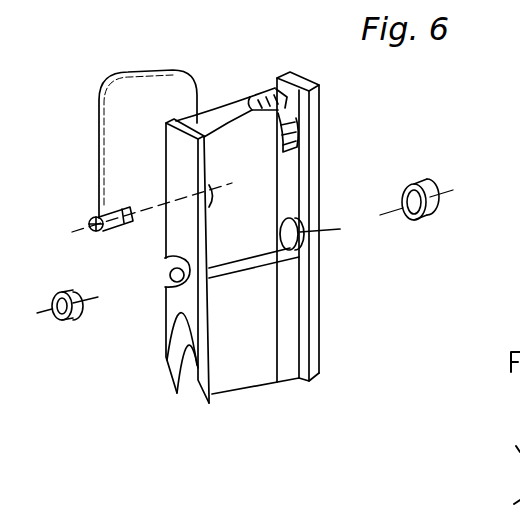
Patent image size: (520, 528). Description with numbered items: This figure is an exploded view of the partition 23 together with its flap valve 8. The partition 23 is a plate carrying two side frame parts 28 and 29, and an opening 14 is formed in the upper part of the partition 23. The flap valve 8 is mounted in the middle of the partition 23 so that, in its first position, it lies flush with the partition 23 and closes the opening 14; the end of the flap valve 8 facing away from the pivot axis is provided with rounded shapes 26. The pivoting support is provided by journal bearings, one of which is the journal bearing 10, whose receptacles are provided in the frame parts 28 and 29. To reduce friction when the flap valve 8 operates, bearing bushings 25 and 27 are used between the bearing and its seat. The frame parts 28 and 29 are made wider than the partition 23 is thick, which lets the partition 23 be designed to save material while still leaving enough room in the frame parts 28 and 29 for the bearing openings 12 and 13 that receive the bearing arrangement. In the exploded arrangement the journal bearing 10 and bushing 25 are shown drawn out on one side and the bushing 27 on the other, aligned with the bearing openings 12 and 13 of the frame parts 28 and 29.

The flap valve 8 is at (140, 104).
The journal bearing 10 is at (92, 218).
The bearing opening 12 is at (172, 268).
The bearing opening 13 is at (262, 247).
The opening 14 is at (245, 170).
The partition 23 is at (277, 326).
The bearing bushing 25 is at (73, 322).
The rounded shapes 26 is at (112, 88).
The bearing bushing 27 is at (433, 185).
The side frame part 28 is at (172, 303).
The side frame part 29 is at (315, 170).